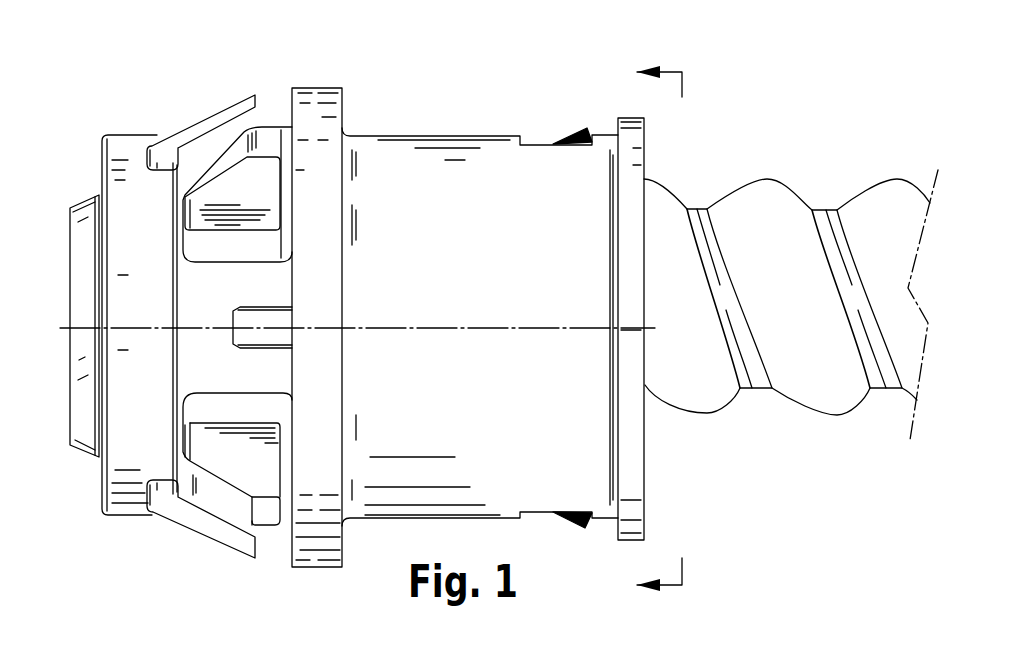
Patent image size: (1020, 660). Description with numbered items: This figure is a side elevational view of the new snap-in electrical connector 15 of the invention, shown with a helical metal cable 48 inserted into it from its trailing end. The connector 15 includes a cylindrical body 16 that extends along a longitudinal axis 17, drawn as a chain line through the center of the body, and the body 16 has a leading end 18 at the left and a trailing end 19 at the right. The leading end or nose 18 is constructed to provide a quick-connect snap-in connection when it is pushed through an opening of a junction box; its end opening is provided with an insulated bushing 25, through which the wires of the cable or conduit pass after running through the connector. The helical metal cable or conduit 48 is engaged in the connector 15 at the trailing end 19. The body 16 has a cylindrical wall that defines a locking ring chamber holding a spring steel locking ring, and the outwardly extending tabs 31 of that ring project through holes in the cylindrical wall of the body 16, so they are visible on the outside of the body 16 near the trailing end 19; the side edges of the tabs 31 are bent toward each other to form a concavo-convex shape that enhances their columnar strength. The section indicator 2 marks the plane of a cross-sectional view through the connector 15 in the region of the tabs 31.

The section line 2- 2 is at (648, 329).
The snap-in connector 15 is at (425, 306).
The cylindrical body 16 is at (480, 333).
The longitudinal axis 17 is at (512, 310).
The leading end 18 is at (195, 82).
The trailing end 19 is at (645, 136).
The insulated bushing 25 is at (70, 228).
The tabs 31 is at (570, 140).
The helical metal cable 48 is at (824, 392).